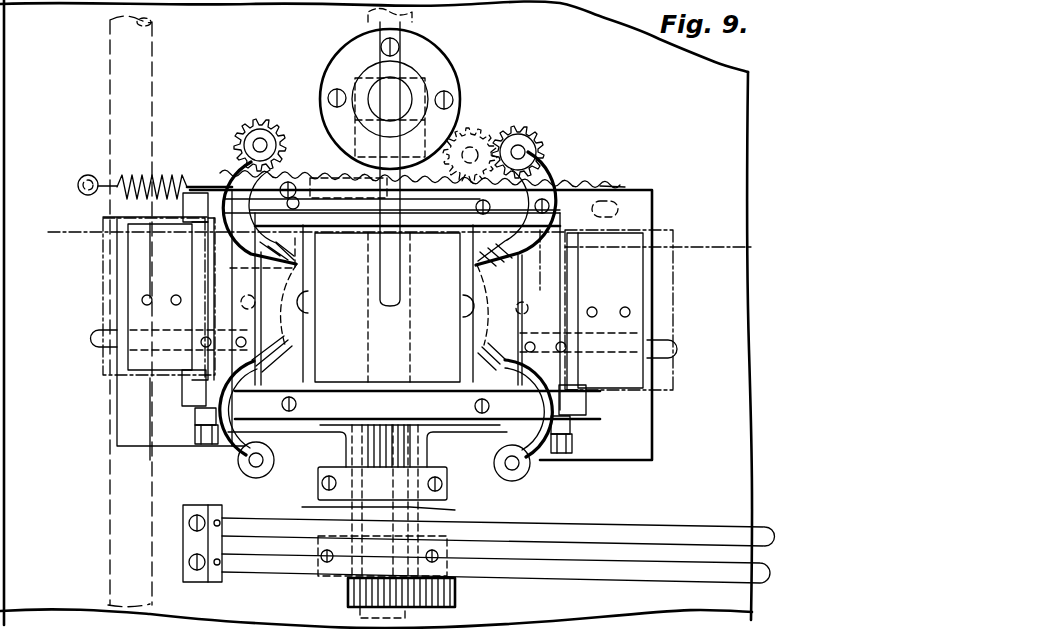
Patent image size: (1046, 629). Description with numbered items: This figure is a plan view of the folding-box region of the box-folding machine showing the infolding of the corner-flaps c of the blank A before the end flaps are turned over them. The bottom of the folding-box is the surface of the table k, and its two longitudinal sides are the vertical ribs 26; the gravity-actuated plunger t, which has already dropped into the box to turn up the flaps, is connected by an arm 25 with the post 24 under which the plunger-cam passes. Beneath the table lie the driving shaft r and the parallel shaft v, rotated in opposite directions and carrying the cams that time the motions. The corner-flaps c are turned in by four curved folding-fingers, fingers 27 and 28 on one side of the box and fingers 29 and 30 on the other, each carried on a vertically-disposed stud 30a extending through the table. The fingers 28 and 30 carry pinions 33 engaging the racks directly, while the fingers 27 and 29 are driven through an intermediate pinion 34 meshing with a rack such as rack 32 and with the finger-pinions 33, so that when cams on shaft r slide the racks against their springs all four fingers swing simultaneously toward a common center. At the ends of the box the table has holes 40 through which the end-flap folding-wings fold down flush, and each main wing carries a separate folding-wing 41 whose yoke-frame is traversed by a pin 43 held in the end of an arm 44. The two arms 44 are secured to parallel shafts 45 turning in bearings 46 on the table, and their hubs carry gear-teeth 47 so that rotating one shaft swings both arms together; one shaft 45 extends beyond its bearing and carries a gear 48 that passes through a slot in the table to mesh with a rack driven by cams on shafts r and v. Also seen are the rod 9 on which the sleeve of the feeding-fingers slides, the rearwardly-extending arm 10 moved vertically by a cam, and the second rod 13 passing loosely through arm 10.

The rod 9 is at (699, 522).
The rearwardly-extending arm 10 is at (405, 244).
The second rod 13 is at (697, 577).
The post 24 is at (390, 100).
The arm 25 is at (384, 178).
The vertical ribs 26 is at (312, 213).
The curved folding-finger 27 is at (233, 455).
The curved folding-finger 28 is at (540, 457).
The curved folding-finger 29 is at (550, 174).
The curved folding-finger 30 is at (226, 153).
The vertically-disposed studs 30a is at (262, 143).
The rack 32 is at (612, 187).
The finger-pinions 33 is at (520, 132).
The intermediate pinion 34 is at (480, 126).
The holes 40 is at (642, 409).
The folding-wing 41 is at (374, 306).
The pins 43 is at (572, 423).
The arms 44 is at (568, 442).
The parallel shafts 45 is at (381, 510).
The bearings 46 is at (449, 470).
The gear-teeth 47 is at (372, 447).
The gear 48 is at (455, 595).
The blank A is at (660, 289).
The corner-flaps c is at (387, 304).
The plunger t is at (387, 307).
The shaft r is at (415, 20).
The shaft v is at (155, 72).
The table k is at (39, 547).